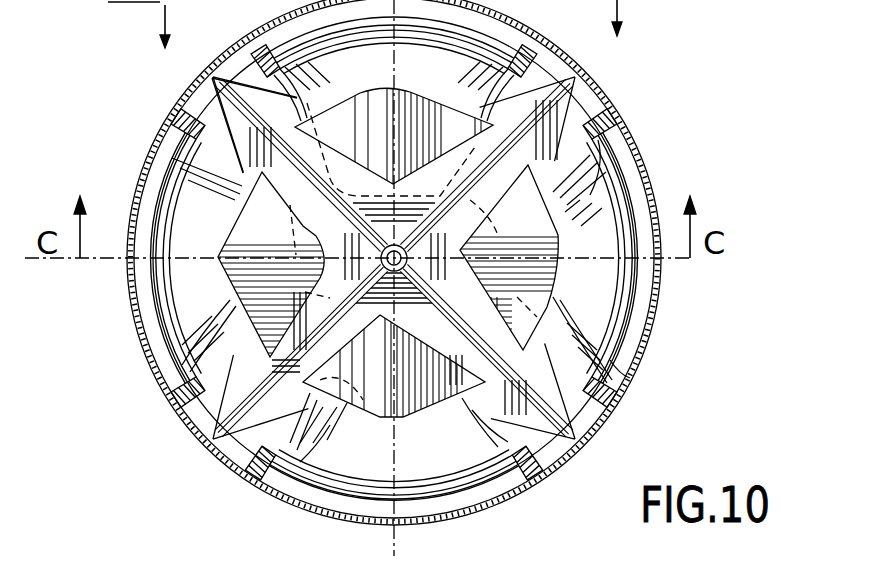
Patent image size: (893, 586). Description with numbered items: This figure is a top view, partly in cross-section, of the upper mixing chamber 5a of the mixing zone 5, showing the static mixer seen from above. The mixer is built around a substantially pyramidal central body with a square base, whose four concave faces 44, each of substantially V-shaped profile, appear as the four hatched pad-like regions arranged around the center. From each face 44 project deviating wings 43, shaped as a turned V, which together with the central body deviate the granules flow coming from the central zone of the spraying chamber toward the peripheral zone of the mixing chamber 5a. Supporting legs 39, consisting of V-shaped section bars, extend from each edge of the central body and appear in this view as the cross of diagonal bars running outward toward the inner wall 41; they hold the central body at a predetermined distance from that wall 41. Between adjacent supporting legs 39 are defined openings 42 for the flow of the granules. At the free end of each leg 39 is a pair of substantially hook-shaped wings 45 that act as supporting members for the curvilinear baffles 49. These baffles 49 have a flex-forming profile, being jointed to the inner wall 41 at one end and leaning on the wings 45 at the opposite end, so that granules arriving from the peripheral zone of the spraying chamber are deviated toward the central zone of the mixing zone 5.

The mixing zone 5 is at (688, 195).
The upper mixing chamber 5a is at (630, 365).
The supporting legs 39 is at (569, 114).
The inner wall 41 is at (183, 116).
The openings 42 is at (580, 304).
The deviating wings 43 is at (437, 112).
The concave faces 44 is at (355, 185).
The hook-shaped wings 45 is at (620, 375).
The curvilinear baffles 49 is at (608, 206).